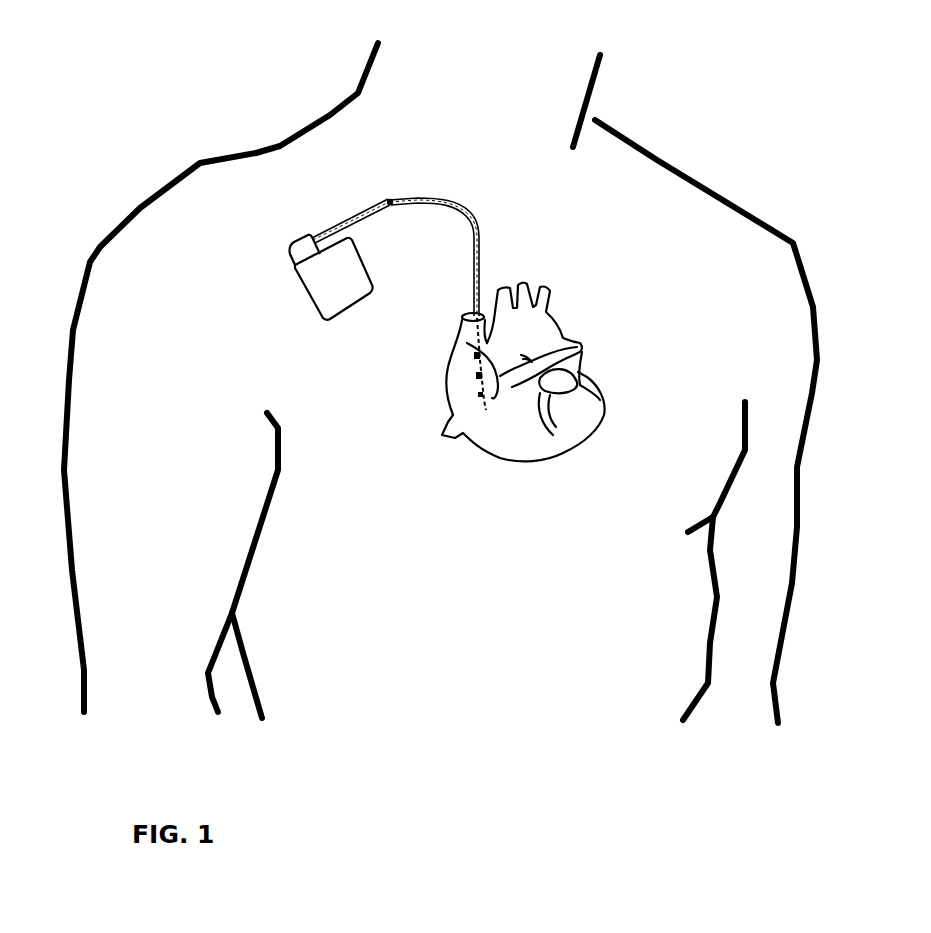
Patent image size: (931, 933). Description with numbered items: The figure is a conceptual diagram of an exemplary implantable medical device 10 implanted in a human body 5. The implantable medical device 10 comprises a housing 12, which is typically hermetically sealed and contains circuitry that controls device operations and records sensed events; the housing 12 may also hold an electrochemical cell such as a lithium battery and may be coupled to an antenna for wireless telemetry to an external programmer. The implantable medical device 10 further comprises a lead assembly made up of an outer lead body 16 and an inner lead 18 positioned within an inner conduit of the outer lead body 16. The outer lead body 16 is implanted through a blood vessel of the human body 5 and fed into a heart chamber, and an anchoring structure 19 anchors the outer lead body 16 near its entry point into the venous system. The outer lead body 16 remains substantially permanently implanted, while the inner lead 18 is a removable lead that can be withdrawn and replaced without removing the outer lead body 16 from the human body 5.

The human body 5 is at (683, 173).
The implantable medical device 10 is at (405, 262).
The housing 12 is at (305, 303).
The outer lead body 16 is at (445, 199).
The inner lead 18 is at (471, 424).
The anchoring structure 19 is at (390, 198).